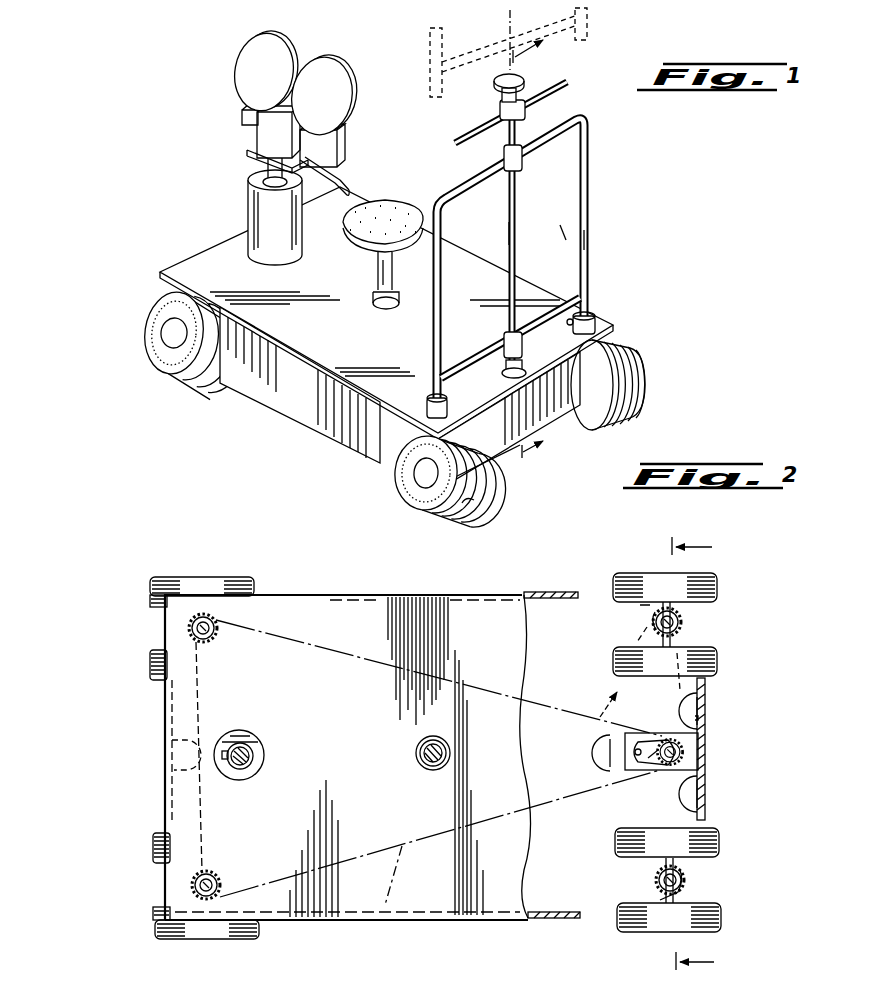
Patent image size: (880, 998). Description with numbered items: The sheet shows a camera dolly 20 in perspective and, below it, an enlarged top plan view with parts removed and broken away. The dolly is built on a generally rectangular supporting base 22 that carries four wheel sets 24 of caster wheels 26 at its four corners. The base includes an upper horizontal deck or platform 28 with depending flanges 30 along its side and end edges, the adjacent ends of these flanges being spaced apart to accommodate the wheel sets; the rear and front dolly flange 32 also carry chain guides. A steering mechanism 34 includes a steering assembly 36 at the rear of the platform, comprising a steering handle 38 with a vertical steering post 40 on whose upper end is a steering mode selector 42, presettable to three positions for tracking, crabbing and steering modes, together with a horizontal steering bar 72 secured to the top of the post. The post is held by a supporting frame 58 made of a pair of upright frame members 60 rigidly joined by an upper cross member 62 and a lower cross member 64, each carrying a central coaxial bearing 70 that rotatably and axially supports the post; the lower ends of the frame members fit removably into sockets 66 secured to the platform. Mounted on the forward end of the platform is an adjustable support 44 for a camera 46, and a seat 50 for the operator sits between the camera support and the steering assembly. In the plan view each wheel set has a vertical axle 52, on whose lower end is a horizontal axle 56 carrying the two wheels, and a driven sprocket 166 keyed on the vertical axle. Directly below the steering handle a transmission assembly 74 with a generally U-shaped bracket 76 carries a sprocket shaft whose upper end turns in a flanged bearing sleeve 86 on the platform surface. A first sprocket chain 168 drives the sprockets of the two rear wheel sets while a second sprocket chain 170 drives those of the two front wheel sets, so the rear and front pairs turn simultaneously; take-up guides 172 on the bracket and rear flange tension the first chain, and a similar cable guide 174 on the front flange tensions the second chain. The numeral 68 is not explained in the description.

In FIG. 1, the camera dolly 20 is at (200, 232).
In FIG. 2, the camera dolly 20 is at (148, 882).
In FIG. 1, the supporting base 22 is at (178, 268).
In FIG. 2, the supporting base 22 is at (348, 757).
In FIG. 1, the wheel sets 24 is at (146, 338).
In FIG. 2, the wheel sets 24 is at (204, 586).
In FIG. 1, the caster wheels 26 is at (476, 500).
In FIG. 2, the caster wheels 26 is at (150, 595).
In FIG. 1, the dolly platform 28 is at (302, 388).
In FIG. 2, the dolly platform 28 is at (450, 905).
In FIG. 1, the depending flanges 30 is at (318, 420).
In FIG. 2, the depending flanges 30 is at (548, 592).
In FIG. 1, the dolly flange 32 is at (520, 448).
In FIG. 1, the steering mechanism 34 is at (532, 213).
In FIG. 2, the steering mechanism 34 is at (402, 846).
In FIG. 1, the steering assembly 36 is at (562, 235).
In FIG. 2, the steering assembly 36 is at (706, 767).
In FIG. 1, the steering handle 38 is at (520, 219).
In FIG. 1, the steering post 40 is at (517, 247).
In FIG. 2, the steering post 40 is at (680, 754).
In FIG. 1, the steering mode selector 42 is at (520, 85).
In FIG. 1, the adjustable camera support 44 is at (262, 182).
In FIG. 2, the adjustable camera support 44 is at (248, 748).
In FIG. 1, the camera 46 is at (236, 80).
In FIG. 1, the seat 50 is at (385, 202).
In FIG. 2, the vertical axle 52 is at (198, 632).
In FIG. 2, the horizontal axle 56 is at (655, 614).
In FIG. 1, the supporting frame 58 is at (589, 243).
In FIG. 1, the upright frame members 60 is at (429, 52).
In FIG. 1, the upper cross member 62 is at (473, 182).
In FIG. 1, the lower cross member 64 is at (476, 348).
In FIG. 1, the sockets 66 is at (592, 312).
In FIG. 1, the lug 68 is at (575, 322).
In FIG. 1, the coaxial bearings 70 is at (520, 165).
In FIG. 1, the steering bar 72 is at (569, 83).
In FIG. 2, the transmission assembly 74 is at (702, 747).
In FIG. 2, the transmission bracket 76 is at (657, 762).
In FIG. 1, the flanged bearing sleeve 86 is at (520, 362).
In FIG. 2, the driven sprocket 166 is at (188, 628).
In FIG. 2, the first sprocket chain 168 is at (609, 700).
In FIG. 2, the second sprocket chain 170 is at (283, 641).
In FIG. 2, the take-up guides 172 is at (690, 712).
In FIG. 2, the cable guide 174 is at (176, 744).